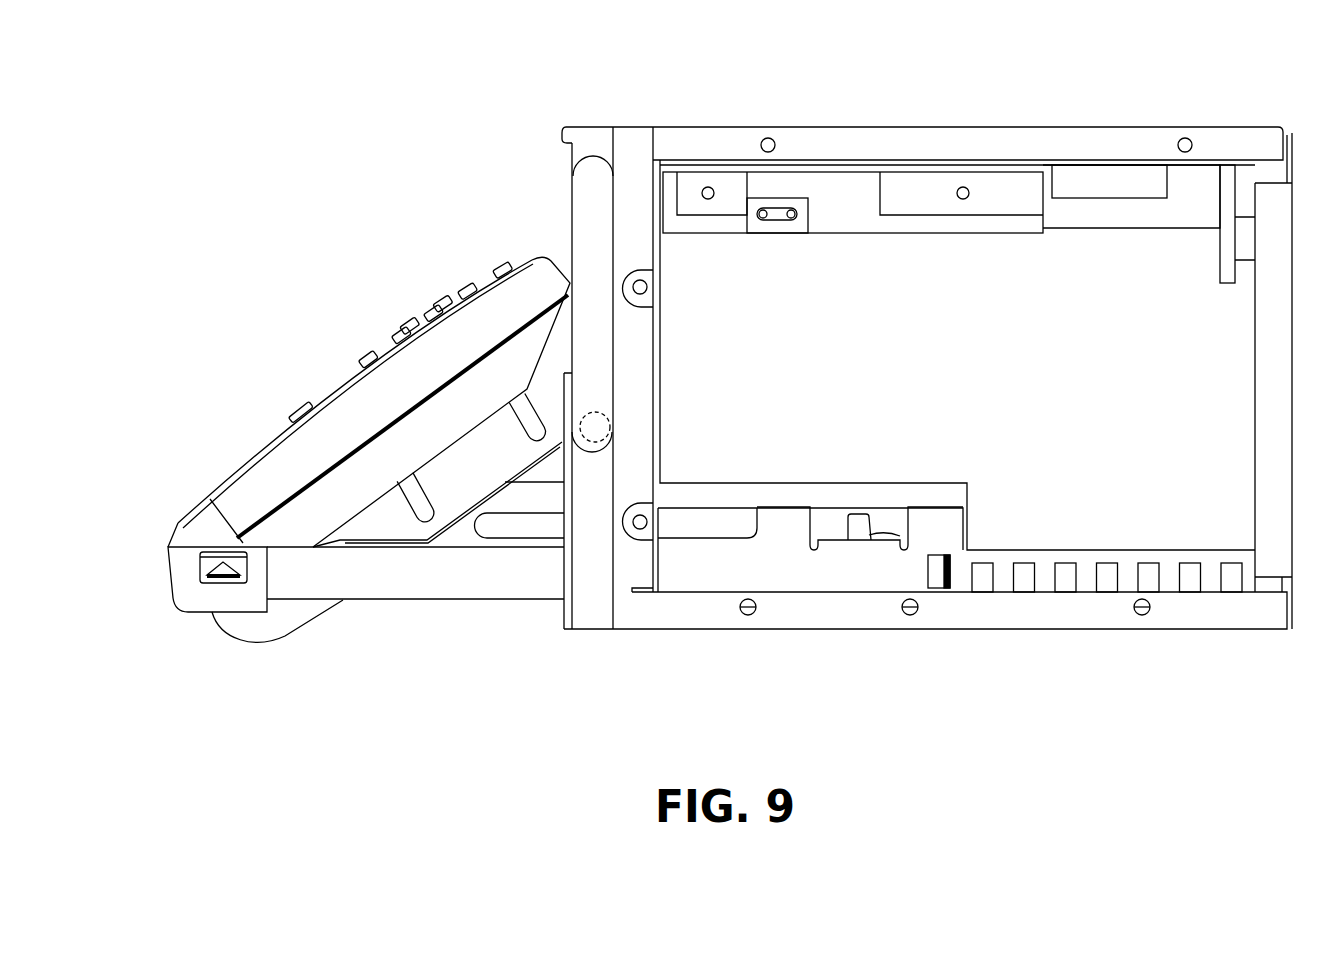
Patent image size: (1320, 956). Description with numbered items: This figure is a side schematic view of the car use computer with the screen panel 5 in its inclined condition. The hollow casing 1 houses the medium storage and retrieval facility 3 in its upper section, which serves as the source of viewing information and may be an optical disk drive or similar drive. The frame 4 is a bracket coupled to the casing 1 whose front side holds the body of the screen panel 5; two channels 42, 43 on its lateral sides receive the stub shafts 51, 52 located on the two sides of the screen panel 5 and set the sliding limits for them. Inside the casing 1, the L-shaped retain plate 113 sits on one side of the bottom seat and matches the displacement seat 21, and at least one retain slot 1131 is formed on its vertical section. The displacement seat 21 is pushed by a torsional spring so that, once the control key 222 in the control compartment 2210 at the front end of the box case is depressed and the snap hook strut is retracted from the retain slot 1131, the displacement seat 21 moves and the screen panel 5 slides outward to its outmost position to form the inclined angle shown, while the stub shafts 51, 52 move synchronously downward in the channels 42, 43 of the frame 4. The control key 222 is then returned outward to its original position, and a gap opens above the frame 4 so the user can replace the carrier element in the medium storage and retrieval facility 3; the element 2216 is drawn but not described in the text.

The casing 1 is at (948, 133).
The medium storage and retrieval facility 3 is at (849, 213).
The frame 4 is at (592, 138).
The channel 42 is at (544, 118).
The channel 43 is at (585, 183).
The screen panel 5 is at (513, 297).
The displacement seat 21 is at (417, 590).
The stub shaft 51 is at (616, 569).
The stub shaft 52 is at (598, 415).
The retain plate 113 is at (808, 572).
The control key 222 is at (199, 574).
The control compartment 2210 is at (197, 603).
The catch 2216 is at (935, 580).
The retain slot 1131 is at (995, 583).